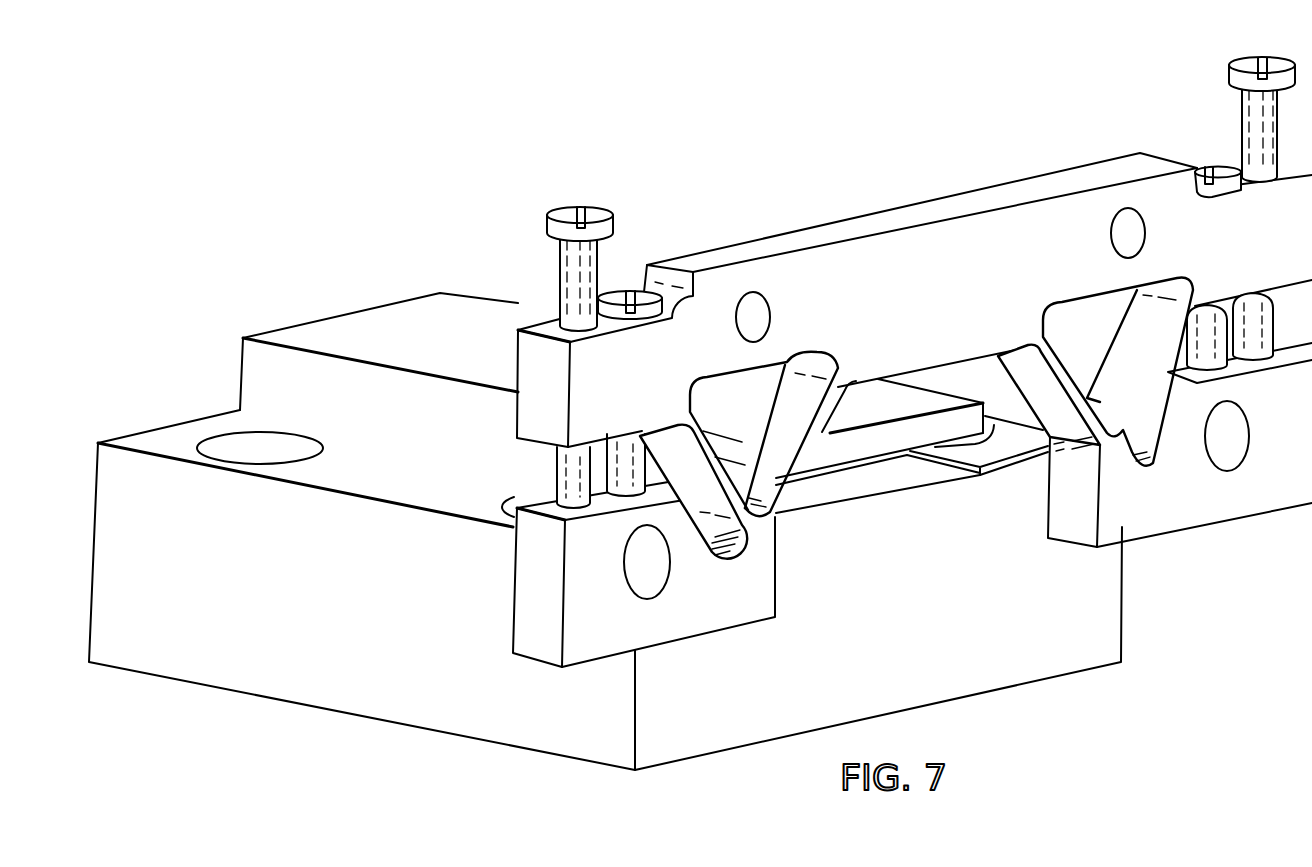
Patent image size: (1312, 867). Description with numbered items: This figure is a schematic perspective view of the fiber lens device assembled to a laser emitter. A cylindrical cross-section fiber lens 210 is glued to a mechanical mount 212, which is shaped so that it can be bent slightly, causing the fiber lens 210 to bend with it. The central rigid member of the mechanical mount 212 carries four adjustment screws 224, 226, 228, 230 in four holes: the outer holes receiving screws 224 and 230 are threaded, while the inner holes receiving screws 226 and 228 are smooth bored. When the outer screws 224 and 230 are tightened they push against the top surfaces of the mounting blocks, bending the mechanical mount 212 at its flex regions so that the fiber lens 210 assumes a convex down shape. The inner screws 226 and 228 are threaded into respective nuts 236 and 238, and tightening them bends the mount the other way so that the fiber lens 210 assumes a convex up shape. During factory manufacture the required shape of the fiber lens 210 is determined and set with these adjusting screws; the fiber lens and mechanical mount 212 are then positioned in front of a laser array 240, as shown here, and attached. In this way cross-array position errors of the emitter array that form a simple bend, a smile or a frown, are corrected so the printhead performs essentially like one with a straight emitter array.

The fiber lens 210 is at (852, 497).
The mechanical mount 212 is at (955, 192).
The adjustment screw 224 is at (1248, 112).
The adjustment screw 226 is at (1227, 168).
The adjustment screw 228 is at (612, 288).
The adjustment screw 230 is at (567, 267).
The nut 236 is at (1223, 455).
The nut 238 is at (653, 583).
The laser array 240 is at (390, 313).